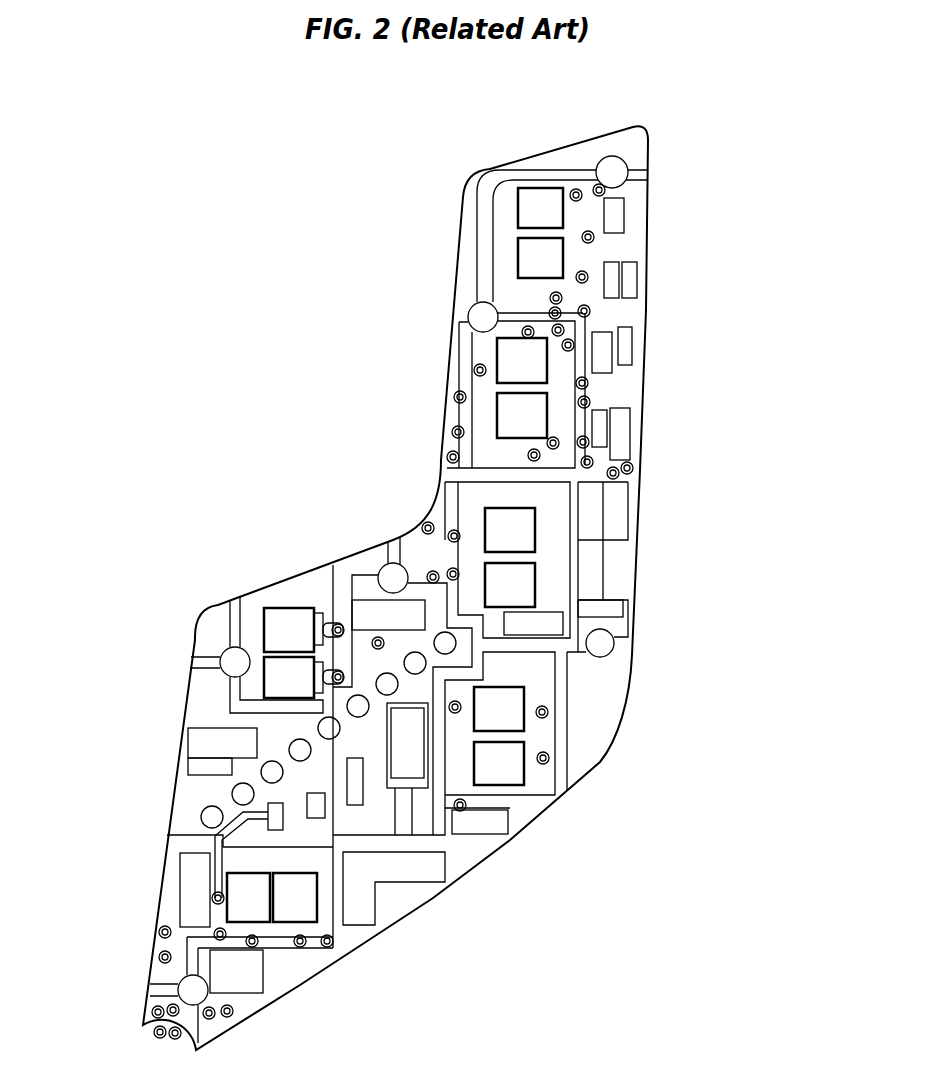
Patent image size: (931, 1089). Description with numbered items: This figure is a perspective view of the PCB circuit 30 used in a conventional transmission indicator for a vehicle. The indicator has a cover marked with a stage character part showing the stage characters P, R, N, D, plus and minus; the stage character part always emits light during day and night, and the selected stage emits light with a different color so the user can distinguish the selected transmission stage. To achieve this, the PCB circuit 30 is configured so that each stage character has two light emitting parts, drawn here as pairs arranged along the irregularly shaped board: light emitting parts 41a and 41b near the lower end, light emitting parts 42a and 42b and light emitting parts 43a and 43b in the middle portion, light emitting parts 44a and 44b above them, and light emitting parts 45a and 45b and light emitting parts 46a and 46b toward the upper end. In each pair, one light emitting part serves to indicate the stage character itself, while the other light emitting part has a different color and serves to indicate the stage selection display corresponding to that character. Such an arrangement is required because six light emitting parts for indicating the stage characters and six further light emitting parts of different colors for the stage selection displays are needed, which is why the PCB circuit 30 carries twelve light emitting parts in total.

The PCB circuit 30 is at (393, 910).
The light emitting part 41a is at (243, 900).
The light emitting part 41b is at (302, 905).
The light emitting part 42a is at (280, 680).
The light emitting part 42b is at (288, 622).
The light emitting part 43a is at (512, 765).
The light emitting part 43b is at (510, 707).
The light emitting part 44a is at (530, 585).
The light emitting part 44b is at (527, 527).
The light emitting part 45a is at (532, 418).
The light emitting part 45b is at (537, 360).
The light emitting part 46a is at (550, 255).
The light emitting part 46b is at (545, 205).